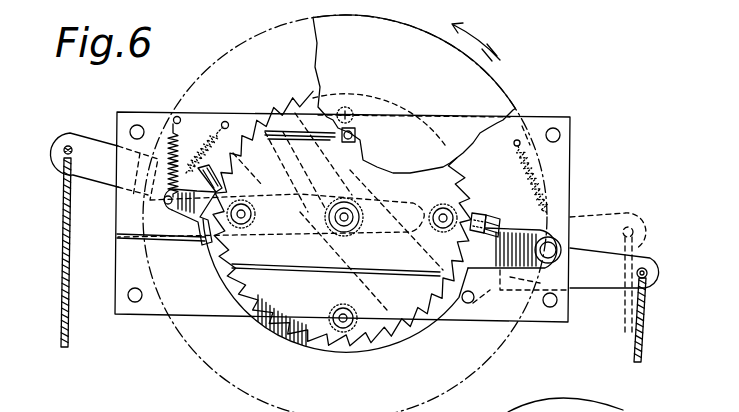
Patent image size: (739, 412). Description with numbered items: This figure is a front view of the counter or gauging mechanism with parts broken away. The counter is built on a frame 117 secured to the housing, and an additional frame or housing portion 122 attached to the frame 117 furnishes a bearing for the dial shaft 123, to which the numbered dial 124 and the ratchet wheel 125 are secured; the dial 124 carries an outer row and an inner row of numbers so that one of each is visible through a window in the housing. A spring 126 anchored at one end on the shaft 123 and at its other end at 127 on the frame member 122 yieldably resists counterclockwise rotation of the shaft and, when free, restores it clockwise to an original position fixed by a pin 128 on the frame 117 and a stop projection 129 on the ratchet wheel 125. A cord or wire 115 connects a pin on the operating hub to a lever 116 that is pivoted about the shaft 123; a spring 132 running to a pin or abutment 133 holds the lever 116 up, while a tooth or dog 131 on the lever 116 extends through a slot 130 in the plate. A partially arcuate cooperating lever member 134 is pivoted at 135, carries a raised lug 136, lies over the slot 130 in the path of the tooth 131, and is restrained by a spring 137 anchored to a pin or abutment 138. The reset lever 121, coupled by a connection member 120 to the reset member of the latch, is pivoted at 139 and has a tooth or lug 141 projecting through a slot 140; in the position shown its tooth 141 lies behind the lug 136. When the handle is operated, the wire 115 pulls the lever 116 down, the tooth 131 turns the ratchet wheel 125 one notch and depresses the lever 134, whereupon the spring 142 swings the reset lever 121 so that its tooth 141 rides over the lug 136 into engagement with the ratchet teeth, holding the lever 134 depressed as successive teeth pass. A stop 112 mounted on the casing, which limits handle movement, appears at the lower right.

The stop 112 is at (623, 410).
The cord or wire 115 is at (62, 257).
The lever 116 is at (88, 146).
The frame 117 is at (562, 153).
The connection member 120 is at (647, 331).
The reset lever 121 is at (645, 261).
The frame or housing portion 122 is at (356, 270).
The dial shaft 123 is at (347, 233).
The dial 124 is at (421, 39).
The ratchet wheel 125 is at (313, 330).
The spring 126 is at (318, 220).
The anchor point of spring 127 is at (311, 170).
The pin 128 is at (357, 134).
The stop projection 129 is at (348, 135).
The slot 130 is at (202, 246).
The tooth or dog 131 is at (206, 170).
The spring 132 is at (210, 132).
The pin or abutment 133 is at (226, 121).
The cooperating lever member 134 is at (268, 326).
The pivot 135 is at (565, 239).
The raised lug 136 is at (483, 213).
The spring 137 is at (167, 132).
The pin or abutment 138 is at (177, 116).
The pivot 139 is at (470, 303).
The slot 140 is at (497, 224).
The tooth or lug 141 is at (478, 212).
The spring 142 is at (547, 184).